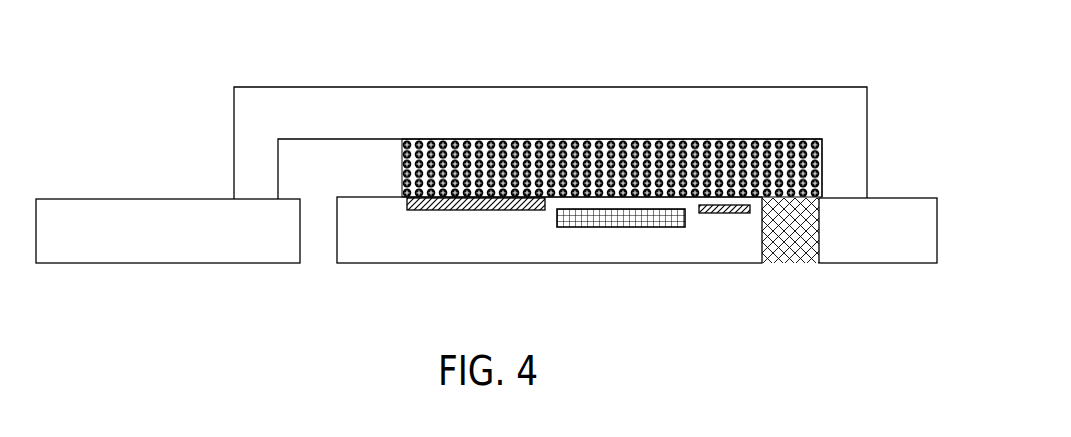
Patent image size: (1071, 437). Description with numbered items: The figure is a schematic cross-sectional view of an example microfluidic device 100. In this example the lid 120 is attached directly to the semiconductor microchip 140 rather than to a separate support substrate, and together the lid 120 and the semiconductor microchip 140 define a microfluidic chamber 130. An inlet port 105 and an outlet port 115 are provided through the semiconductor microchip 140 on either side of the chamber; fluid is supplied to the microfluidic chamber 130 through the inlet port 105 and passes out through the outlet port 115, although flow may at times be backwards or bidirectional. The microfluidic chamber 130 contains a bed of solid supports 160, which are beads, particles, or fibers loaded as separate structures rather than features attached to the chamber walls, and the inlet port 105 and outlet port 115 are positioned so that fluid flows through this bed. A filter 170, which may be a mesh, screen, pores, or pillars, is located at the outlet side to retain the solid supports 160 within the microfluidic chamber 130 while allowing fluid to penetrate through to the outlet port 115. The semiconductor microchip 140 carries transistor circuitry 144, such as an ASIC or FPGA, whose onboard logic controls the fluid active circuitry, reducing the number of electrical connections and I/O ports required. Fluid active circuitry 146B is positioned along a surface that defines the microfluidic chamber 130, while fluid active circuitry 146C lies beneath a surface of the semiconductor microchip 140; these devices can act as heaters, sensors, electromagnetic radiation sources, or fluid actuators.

The microfluidic device 100 is at (168, 50).
The inlet port 105 is at (320, 267).
The outlet port 115 is at (790, 273).
The lid 120 is at (248, 152).
The microfluidic chamber 130 is at (370, 179).
The semiconductor microchip 140 is at (190, 244).
The transistor circuitry 144 is at (628, 203).
The fluid active circuitry 146B is at (422, 205).
The fluid active circuitry 146C is at (720, 205).
The solid supports 160 is at (530, 140).
The filter 170 is at (805, 237).